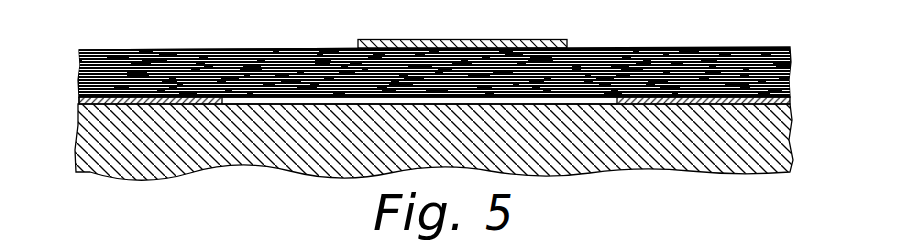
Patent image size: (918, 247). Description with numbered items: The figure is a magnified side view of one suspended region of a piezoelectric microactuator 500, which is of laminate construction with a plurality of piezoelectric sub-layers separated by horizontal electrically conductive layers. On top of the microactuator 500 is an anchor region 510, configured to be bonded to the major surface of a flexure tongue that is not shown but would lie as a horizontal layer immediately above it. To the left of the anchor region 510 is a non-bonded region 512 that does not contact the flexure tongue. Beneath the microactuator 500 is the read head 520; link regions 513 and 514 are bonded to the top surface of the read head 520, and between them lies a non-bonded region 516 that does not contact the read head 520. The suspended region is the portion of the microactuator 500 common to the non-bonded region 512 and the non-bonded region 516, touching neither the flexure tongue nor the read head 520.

The piezoelectric microactuator 500 is at (792, 60).
The anchor region 510 is at (371, 40).
The non-bonded region 512 is at (184, 48).
The link region 513 is at (78, 101).
The link region 514 is at (791, 97).
The non-bonded region 516 is at (248, 98).
The read head 520 is at (793, 150).